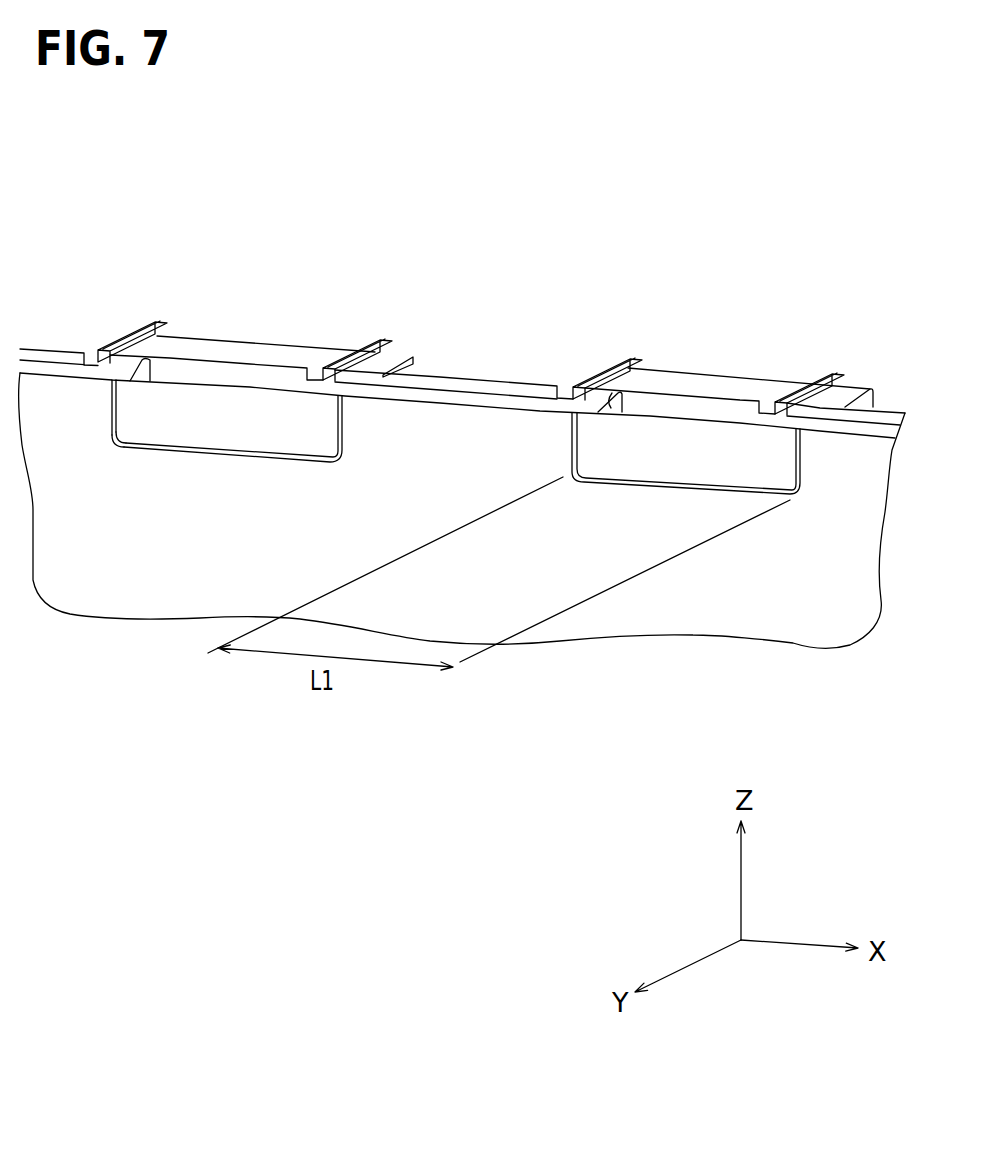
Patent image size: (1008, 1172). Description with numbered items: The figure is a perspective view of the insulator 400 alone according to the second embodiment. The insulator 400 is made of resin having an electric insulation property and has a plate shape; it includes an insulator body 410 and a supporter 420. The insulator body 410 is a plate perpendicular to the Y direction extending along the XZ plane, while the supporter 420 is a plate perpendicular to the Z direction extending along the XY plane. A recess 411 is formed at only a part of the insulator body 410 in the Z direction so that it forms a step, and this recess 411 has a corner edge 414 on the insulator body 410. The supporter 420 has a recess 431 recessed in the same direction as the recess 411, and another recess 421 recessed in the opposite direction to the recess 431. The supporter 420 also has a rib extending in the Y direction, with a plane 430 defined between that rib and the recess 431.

The insulator 400 is at (462, 499).
The insulator body 410 is at (805, 605).
The recess 411 is at (465, 546).
The corner edge 414 is at (127, 447).
The supporter 420 is at (700, 384).
The recess 421 is at (412, 369).
The plane 430 is at (772, 405).
The recess 431 is at (605, 404).